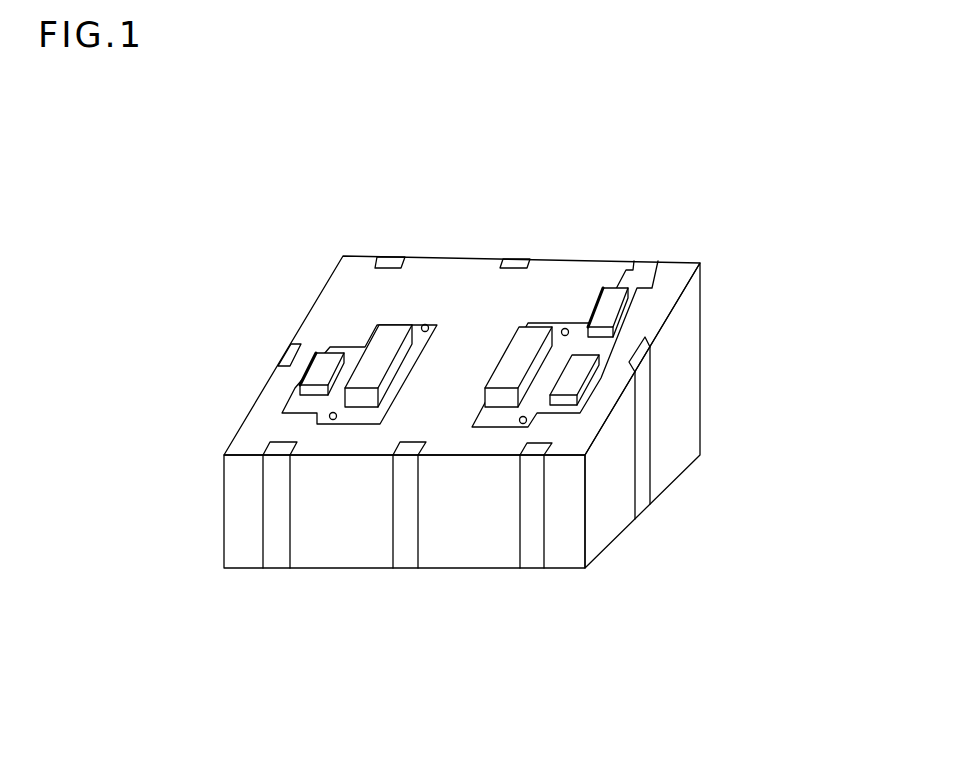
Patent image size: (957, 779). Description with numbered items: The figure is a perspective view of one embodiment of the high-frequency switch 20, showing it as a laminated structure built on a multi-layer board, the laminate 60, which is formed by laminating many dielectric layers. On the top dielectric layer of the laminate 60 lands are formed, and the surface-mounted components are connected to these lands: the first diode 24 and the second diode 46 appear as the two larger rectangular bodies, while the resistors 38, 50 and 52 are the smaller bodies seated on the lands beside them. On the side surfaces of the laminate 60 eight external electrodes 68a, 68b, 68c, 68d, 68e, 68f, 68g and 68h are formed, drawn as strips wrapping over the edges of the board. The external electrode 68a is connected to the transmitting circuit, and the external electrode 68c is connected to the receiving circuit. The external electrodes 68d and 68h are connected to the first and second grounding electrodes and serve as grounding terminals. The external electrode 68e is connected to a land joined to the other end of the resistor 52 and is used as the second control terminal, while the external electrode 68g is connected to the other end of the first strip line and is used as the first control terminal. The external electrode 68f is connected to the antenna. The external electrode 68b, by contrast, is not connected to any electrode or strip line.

The high-frequency switch 20 is at (850, 152).
The first diode 24 is at (382, 342).
The resistor 38 is at (318, 374).
The second diode 46 is at (510, 370).
The resistor 50 is at (574, 378).
The resistor 52 is at (618, 307).
The laminate 60 is at (712, 266).
The external electrode 68a is at (275, 555).
The external electrode 68b is at (403, 557).
The external electrode 68c is at (530, 555).
The external electrode 68d is at (642, 463).
The external electrode 68e is at (654, 262).
The external electrode 68f is at (522, 258).
The external electrode 68g is at (390, 257).
The external electrode 68h is at (286, 358).